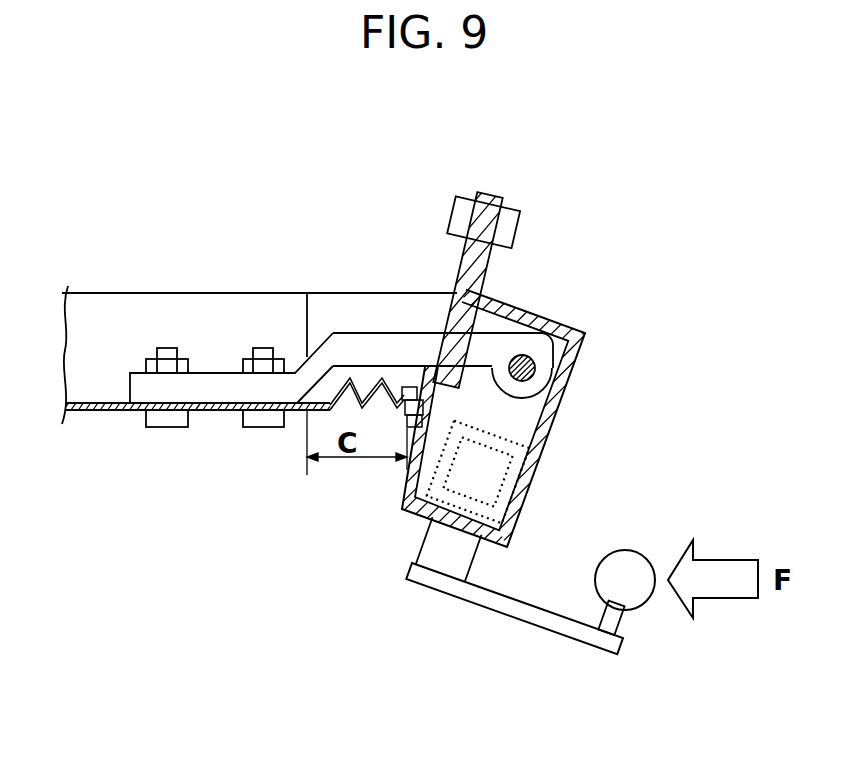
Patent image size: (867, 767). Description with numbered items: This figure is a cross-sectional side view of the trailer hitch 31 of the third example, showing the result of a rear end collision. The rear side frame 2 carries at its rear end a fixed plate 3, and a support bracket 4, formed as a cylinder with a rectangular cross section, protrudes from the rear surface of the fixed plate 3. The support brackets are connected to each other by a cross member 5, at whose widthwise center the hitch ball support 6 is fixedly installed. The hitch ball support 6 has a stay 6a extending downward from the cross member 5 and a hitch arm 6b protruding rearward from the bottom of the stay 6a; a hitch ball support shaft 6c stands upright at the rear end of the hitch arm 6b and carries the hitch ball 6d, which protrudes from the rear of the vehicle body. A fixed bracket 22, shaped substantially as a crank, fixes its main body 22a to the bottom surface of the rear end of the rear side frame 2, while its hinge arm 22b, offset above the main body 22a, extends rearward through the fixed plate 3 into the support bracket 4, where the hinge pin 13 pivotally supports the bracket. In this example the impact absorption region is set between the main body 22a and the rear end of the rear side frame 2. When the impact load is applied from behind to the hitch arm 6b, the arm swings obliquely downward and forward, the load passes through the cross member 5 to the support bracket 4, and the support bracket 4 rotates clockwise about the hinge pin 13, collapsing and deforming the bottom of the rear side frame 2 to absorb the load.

The rear side frame 2 is at (128, 292).
The fixed bracket 22 is at (320, 178).
The main body 22a is at (213, 372).
The hinge arm 22b is at (370, 333).
The fixed plate 3 is at (487, 288).
The hinge pin 13 is at (560, 362).
The support bracket 4 is at (557, 412).
The cross member 5 is at (530, 482).
The trailer hitch 31 is at (578, 255).
The hitch ball support 6 is at (447, 618).
The stay 6a is at (428, 546).
The hitch arm 6b is at (577, 643).
The hitch ball support shaft 6c is at (622, 622).
The hitch ball 6d is at (594, 570).